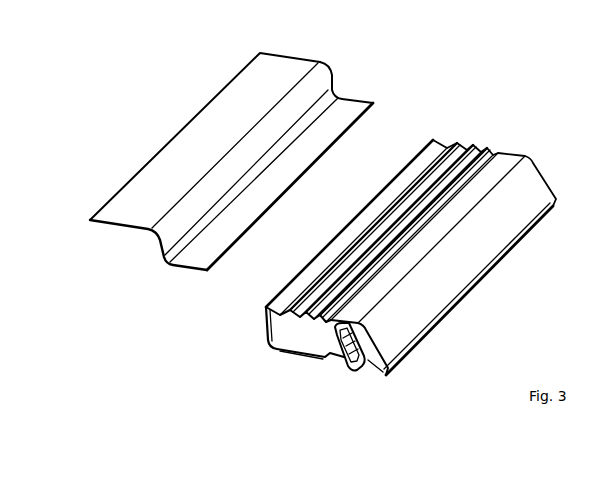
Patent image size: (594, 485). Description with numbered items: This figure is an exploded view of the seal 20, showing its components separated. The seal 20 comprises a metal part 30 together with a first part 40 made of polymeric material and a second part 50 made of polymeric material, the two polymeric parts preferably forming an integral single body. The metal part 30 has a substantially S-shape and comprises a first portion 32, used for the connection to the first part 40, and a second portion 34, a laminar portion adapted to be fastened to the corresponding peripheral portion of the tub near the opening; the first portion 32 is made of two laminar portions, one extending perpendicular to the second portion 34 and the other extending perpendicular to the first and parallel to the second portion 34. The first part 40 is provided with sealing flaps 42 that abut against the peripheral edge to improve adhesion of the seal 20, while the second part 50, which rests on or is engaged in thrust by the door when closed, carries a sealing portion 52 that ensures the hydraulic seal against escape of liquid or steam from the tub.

The seal 20 is at (99, 59).
The metal part 30 is at (360, 49).
The first portion 32 is at (192, 252).
The second portion 34 is at (157, 175).
The first part made of polymeric material 40 is at (292, 395).
The sealing flaps 42 is at (474, 125).
The second part made of polymeric material 50 is at (356, 398).
The sealing portion 52 is at (463, 287).